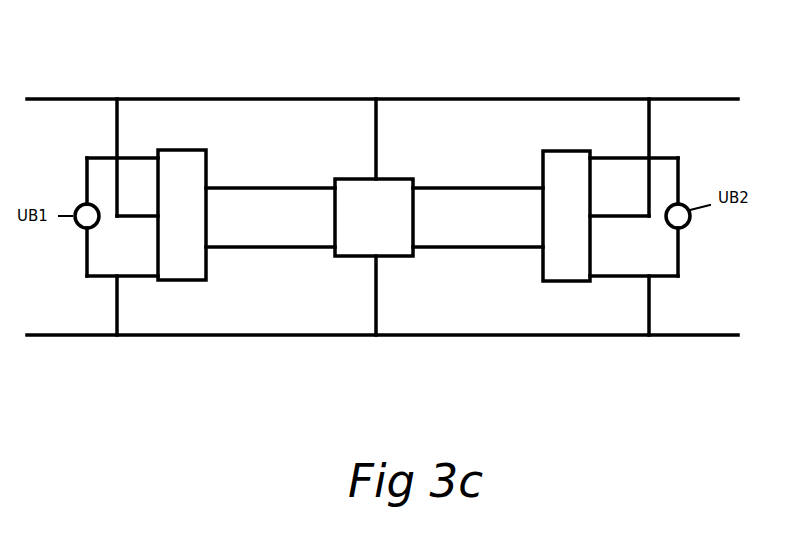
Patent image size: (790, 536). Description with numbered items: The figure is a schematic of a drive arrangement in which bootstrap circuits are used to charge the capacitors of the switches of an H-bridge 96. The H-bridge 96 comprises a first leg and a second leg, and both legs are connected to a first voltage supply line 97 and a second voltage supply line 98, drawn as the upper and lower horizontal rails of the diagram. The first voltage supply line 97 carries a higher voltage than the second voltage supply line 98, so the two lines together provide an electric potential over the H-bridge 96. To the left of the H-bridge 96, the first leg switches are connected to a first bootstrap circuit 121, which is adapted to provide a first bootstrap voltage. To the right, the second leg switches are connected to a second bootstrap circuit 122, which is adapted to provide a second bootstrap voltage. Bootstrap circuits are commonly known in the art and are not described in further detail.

The H-bridge 96 is at (359, 177).
The first voltage supply line 97 is at (442, 97).
The second voltage supply line 98 is at (482, 336).
The first bootstrap circuit 121 is at (187, 282).
The second bootstrap circuit 122 is at (580, 282).